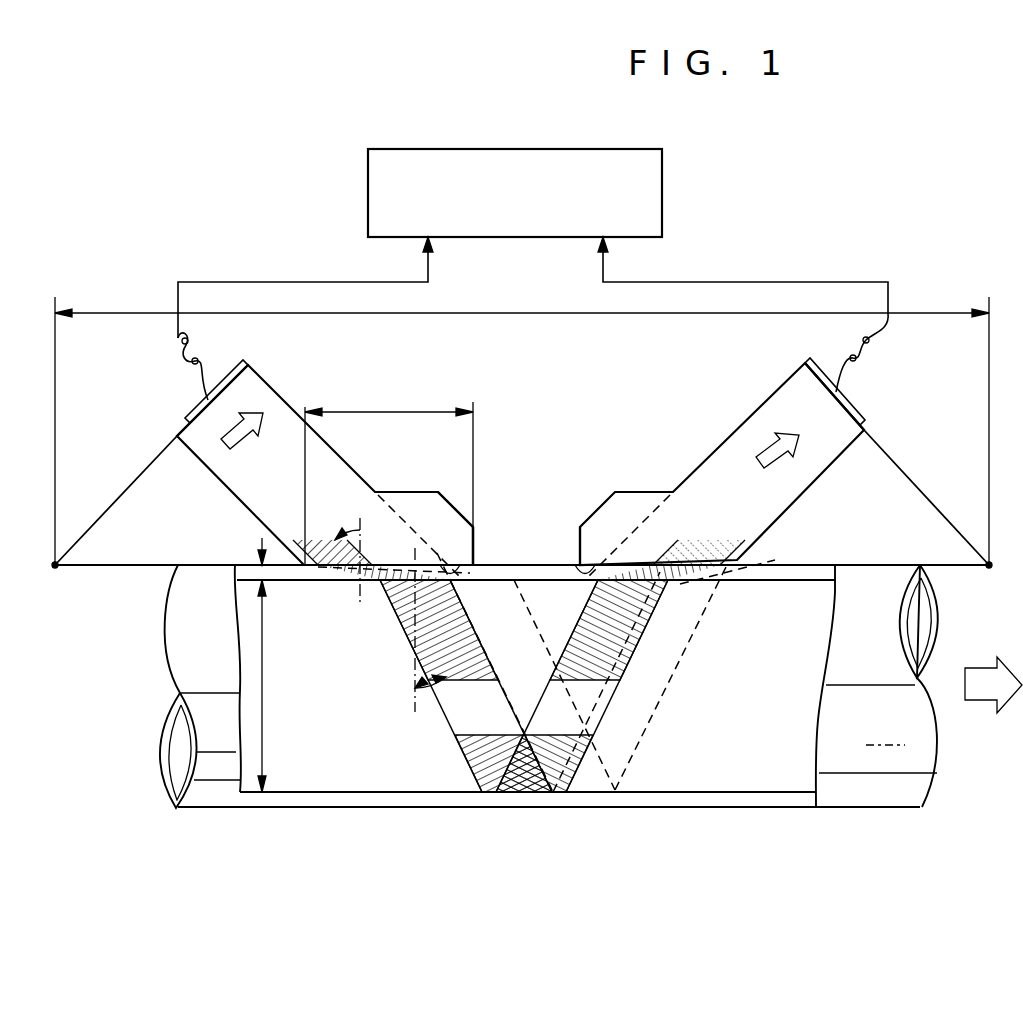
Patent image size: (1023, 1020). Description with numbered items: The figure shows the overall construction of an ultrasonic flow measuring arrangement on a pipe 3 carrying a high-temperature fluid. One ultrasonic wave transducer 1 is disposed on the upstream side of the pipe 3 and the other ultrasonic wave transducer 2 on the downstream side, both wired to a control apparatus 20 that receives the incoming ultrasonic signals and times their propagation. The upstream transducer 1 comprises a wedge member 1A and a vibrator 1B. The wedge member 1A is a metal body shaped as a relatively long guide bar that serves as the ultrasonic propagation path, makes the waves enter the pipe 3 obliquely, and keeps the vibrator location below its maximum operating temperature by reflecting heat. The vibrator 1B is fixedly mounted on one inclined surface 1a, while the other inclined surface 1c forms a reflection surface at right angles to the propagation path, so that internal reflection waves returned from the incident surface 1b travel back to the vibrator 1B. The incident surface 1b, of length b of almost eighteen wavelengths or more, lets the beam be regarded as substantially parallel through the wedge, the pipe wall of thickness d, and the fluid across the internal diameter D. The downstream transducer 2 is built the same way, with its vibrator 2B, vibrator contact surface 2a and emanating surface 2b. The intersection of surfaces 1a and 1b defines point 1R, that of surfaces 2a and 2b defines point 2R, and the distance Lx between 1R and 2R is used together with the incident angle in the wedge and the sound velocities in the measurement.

The control apparatus 20 is at (668, 173).
The ultrasonic wave transducer 1 is at (284, 392).
The wedge member 1A is at (237, 477).
The inclined surface 1a is at (180, 438).
The vibrator 1B is at (214, 392).
The incident surface 1b is at (475, 548).
The inclined surface 1c is at (450, 492).
The ultrasonic wave transducer 2 is at (746, 410).
The vibrator contact surface 2a is at (868, 428).
The piezoelectric element of second transducer 2B is at (848, 402).
The ultrasonic wave emanating surface 2b is at (582, 566).
The pipe 3 is at (866, 785).
The intersection point 1R is at (54, 579).
The intersection point 2R is at (989, 579).
The distance between intersection points Lx is at (512, 313).
The length of incident surface b is at (398, 410).
The plate thickness of pipe d is at (258, 572).
The internal diameter of pipe D is at (262, 684).